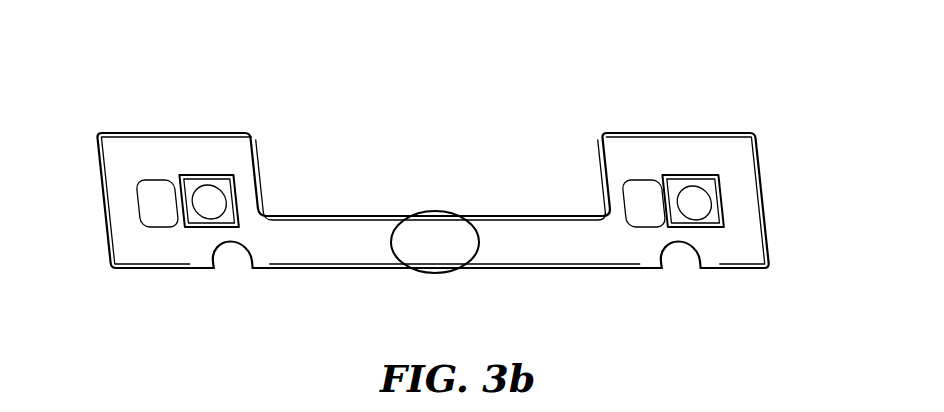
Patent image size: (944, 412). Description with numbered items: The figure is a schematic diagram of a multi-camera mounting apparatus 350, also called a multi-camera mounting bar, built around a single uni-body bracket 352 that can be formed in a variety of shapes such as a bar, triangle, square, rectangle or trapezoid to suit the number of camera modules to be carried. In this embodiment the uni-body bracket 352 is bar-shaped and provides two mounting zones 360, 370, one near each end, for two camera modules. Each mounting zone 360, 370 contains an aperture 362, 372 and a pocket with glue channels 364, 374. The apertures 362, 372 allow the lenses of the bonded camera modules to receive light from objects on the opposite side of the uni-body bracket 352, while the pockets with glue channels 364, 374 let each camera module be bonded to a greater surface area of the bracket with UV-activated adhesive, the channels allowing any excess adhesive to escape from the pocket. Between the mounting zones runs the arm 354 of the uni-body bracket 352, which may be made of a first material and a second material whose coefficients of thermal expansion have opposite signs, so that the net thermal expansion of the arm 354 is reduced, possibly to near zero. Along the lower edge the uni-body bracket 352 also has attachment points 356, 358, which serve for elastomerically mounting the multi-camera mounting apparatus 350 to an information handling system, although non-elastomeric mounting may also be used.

The multi-camera mounting apparatus 350 is at (532, 103).
The uni-body bracket 352 is at (365, 210).
The arm 354 is at (443, 275).
The attachment point 356 is at (230, 268).
The attachment point 358 is at (704, 250).
The mounting zone 360 is at (697, 171).
The aperture 362 is at (703, 188).
The pocket with glue channels 364 is at (727, 212).
The mounting zone 370 is at (210, 170).
The aperture 372 is at (203, 210).
The pocket with glue channels 374 is at (176, 197).